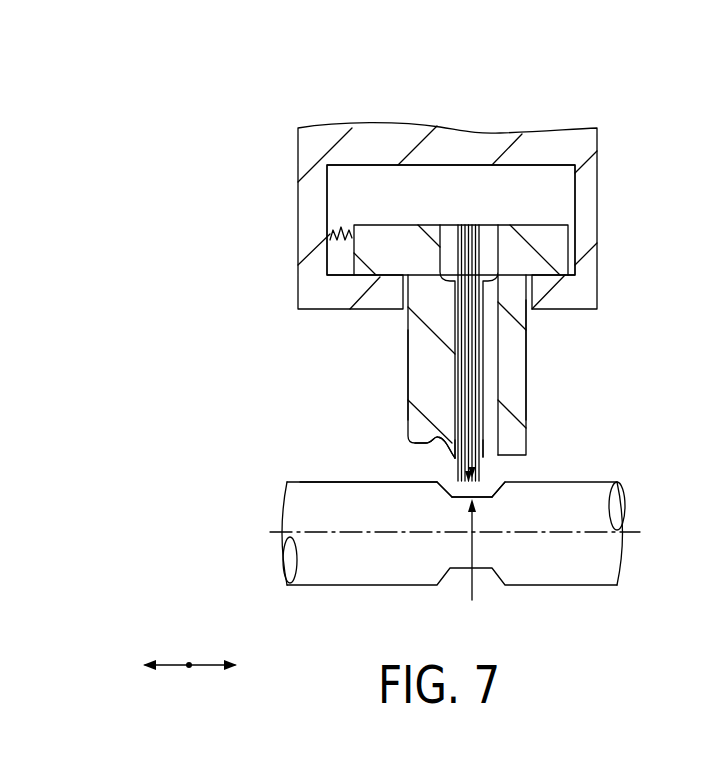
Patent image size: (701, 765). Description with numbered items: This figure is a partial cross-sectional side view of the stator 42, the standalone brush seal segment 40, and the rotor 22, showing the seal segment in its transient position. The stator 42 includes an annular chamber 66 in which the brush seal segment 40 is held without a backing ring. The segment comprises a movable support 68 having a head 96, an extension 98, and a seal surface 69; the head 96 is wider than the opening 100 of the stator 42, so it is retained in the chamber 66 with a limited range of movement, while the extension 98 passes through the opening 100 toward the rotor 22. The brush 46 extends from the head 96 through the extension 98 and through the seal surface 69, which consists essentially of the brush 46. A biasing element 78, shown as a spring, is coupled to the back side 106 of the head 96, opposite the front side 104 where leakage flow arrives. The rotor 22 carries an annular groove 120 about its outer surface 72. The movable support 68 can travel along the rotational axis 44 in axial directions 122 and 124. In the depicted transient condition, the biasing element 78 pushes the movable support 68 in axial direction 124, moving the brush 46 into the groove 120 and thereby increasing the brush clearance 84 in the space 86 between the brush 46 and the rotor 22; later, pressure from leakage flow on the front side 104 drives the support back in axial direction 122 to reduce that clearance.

The rotor 22 is at (310, 583).
The brush seal segment 40 is at (178, 349).
The stator 42 is at (292, 180).
The rotational axis 44 is at (452, 532).
The brush 46 is at (483, 457).
The chamber 66 is at (563, 193).
The movable support 68 is at (530, 347).
The seal surface 69 is at (427, 443).
The outer surface 72 is at (298, 480).
The biasing element 78 is at (346, 233).
The brush clearance 84 is at (472, 540).
The space 86 is at (500, 486).
The head 96 is at (372, 224).
The extension 98 is at (408, 360).
The opening 100 is at (400, 305).
The front side 104 is at (527, 380).
The back side 106 is at (408, 400).
The groove 120 is at (462, 497).
The axial direction 122 is at (173, 662).
The axial direction 124 is at (207, 667).